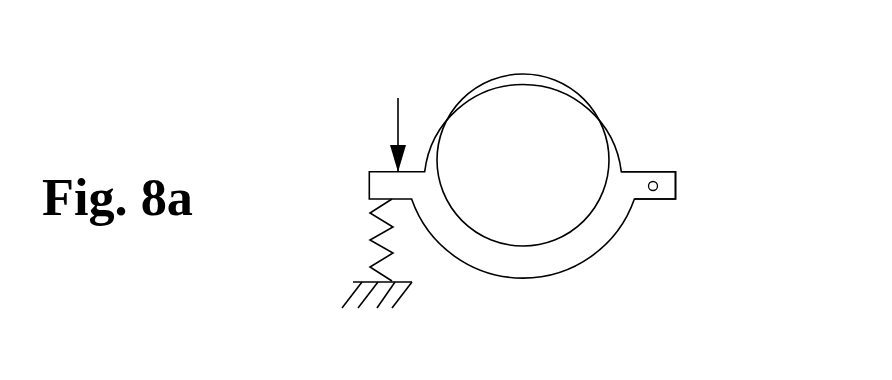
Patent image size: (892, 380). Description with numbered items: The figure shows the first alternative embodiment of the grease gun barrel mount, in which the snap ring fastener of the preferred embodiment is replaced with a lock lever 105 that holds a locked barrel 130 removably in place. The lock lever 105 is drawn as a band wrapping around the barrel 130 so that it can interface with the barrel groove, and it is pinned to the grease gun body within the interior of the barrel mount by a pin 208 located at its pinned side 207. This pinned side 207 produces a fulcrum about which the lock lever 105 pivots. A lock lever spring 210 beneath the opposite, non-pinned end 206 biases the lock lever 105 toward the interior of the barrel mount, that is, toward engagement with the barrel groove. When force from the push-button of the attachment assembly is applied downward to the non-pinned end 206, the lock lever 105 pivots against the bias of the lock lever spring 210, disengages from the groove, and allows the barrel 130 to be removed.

The barrel 130 is at (480, 73).
The lock lever retention fastener 105 is at (577, 263).
The non-pinned end of the lock lever 206 is at (358, 185).
The pin 208 is at (655, 180).
The pinned side of the lock lever 207 is at (648, 208).
The lock lever spring 210 is at (375, 268).